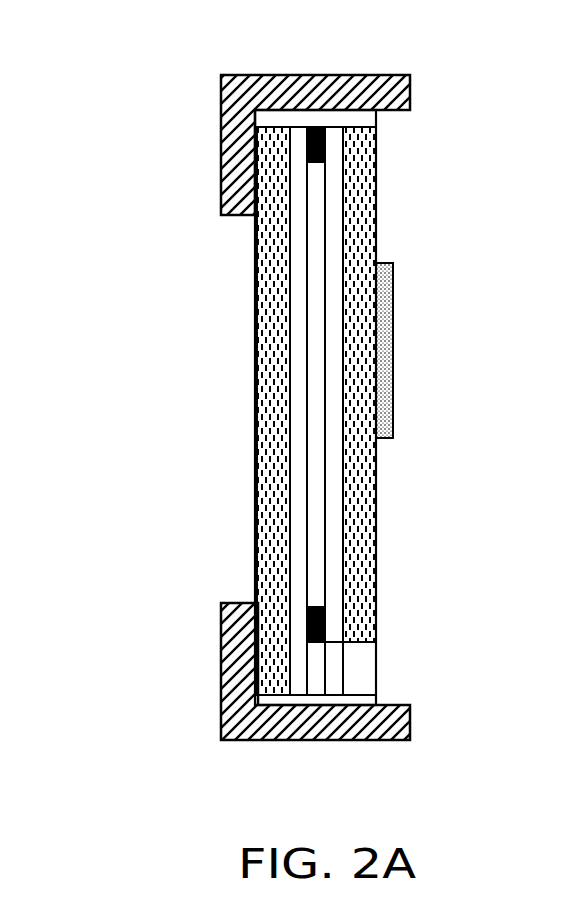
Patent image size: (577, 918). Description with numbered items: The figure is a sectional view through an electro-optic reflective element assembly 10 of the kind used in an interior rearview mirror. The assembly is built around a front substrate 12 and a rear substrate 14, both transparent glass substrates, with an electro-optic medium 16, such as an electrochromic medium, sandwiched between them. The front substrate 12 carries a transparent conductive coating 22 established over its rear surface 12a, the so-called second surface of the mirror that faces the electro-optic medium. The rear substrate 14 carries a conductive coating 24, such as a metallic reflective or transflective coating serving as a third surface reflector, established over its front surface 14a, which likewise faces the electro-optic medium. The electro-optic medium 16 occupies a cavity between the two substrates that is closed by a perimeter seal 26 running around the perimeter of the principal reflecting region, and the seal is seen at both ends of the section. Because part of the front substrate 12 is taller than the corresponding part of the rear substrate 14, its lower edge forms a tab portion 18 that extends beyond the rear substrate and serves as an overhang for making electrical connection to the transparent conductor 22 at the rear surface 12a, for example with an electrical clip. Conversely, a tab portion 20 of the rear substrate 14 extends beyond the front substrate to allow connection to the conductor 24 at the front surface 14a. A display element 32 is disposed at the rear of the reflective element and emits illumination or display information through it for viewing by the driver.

The electro-optic reflective element assembly 10 is at (188, 506).
The front substrate 12 is at (275, 290).
The rear surface of front substrate 12a is at (289, 368).
The rear substrate 14 is at (362, 230).
The front surface of rear substrate 14a is at (342, 193).
The electro-optic medium 16 is at (315, 500).
The tab portion of front substrate 18 is at (268, 669).
The tab portion of rear substrate 20 is at (382, 660).
The transparent conductive coating 22 is at (298, 432).
The conductive coating 24 is at (333, 460).
The perimeter seal 26 is at (317, 123).
The display element 32 is at (393, 327).